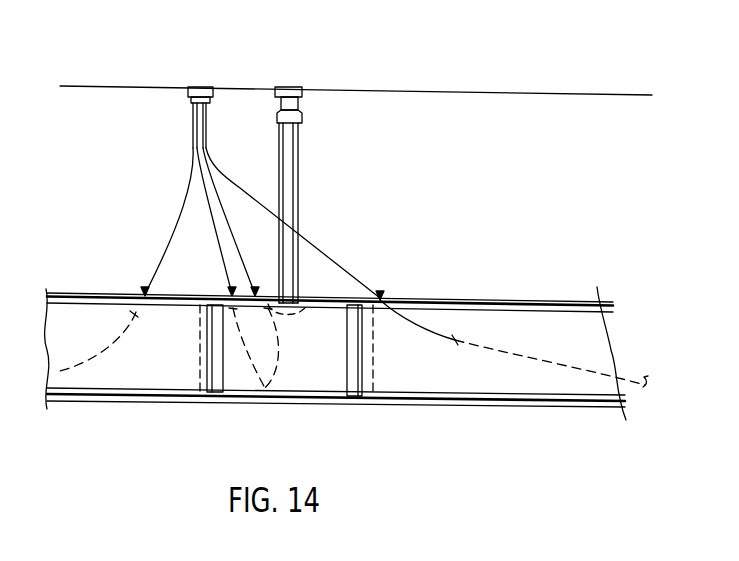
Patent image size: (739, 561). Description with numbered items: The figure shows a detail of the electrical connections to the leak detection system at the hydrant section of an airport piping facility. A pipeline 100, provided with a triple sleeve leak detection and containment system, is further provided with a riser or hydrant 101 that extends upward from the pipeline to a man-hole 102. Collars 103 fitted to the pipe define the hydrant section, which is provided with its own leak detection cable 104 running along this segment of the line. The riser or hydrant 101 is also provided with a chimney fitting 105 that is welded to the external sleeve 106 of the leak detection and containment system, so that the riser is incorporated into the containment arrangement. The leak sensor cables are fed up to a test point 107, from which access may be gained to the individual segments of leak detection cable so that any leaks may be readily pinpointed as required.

The pipeline 100 is at (569, 357).
The riser or hydrant 101 is at (296, 160).
The man-hole 102 is at (292, 88).
The collars 103 is at (205, 348).
The leak detection cable 104 is at (253, 236).
The chimney fitting 105 is at (299, 222).
The external sleeve 106 is at (393, 297).
The test point 107 is at (188, 90).